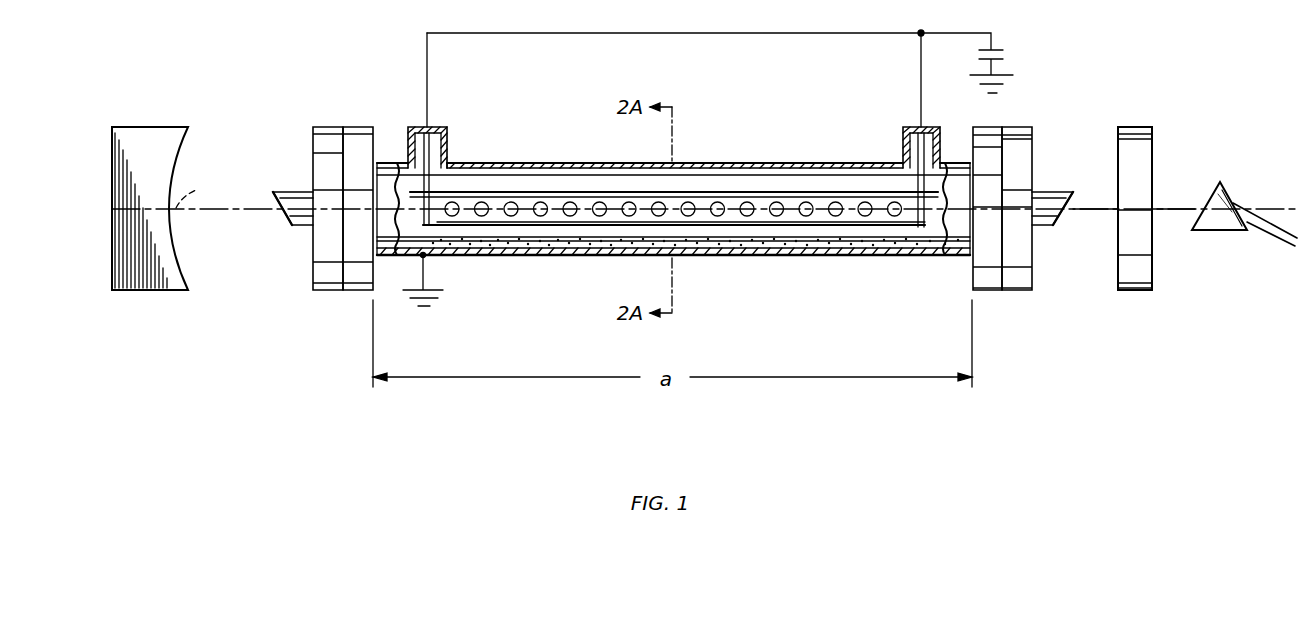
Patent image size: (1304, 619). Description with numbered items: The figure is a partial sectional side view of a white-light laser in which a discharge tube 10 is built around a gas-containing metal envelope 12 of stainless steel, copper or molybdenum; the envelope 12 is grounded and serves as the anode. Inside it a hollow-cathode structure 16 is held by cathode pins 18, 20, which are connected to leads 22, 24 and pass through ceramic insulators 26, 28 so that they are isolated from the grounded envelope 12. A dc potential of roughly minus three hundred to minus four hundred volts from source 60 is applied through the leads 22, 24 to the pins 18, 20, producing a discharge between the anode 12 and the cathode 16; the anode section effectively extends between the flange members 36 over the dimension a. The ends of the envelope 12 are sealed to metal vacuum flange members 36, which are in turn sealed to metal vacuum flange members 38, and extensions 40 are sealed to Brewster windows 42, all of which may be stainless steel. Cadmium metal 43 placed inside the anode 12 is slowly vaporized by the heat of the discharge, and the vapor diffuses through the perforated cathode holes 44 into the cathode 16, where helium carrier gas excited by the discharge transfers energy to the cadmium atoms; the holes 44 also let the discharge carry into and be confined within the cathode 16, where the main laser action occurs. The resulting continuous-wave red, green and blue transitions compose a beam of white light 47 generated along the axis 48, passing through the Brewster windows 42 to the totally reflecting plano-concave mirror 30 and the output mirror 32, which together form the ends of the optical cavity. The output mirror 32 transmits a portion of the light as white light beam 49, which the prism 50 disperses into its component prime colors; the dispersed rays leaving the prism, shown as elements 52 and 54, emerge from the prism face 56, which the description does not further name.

The discharge tube 10 is at (918, 272).
The metal envelope 12 is at (396, 160).
The hollow-cathode structure 16 is at (513, 190).
The cathode pin 18 is at (447, 161).
The cathode pin 20 is at (945, 162).
The lead 22 is at (427, 48).
The lead 24 is at (920, 69).
The ceramic insulator 26 is at (430, 128).
The ceramic insulator 28 is at (905, 128).
The plano-concave mirror 30 is at (173, 127).
The output mirror 32 is at (1140, 127).
The metal vacuum flange member 36 is at (359, 127).
The metal vacuum flange member 38 is at (319, 128).
The extension 40 is at (292, 190).
The Brewster window 42 is at (282, 216).
The cadmium metal 43 is at (499, 244).
The perforated cathode holes 44 is at (569, 219).
The beam of white light 47 is at (1097, 208).
The axis 48 is at (196, 192).
The white light beam 49 is at (1186, 208).
The prism 50 is at (1196, 231).
The deflected beam upper ray 52 is at (1270, 218).
The deflected beam lower ray 54 is at (1290, 245).
The prism exit face 56 is at (1250, 228).
The source 60 is at (1004, 56).